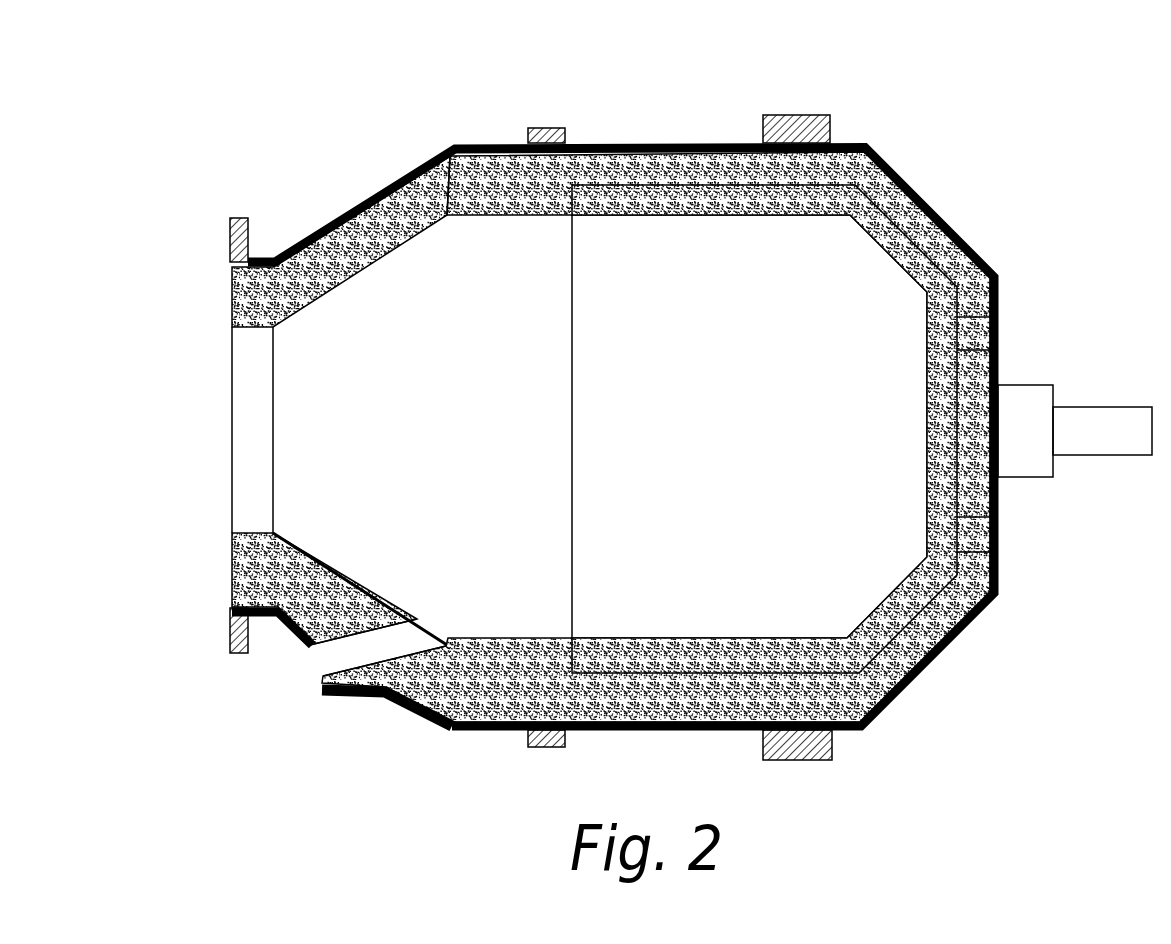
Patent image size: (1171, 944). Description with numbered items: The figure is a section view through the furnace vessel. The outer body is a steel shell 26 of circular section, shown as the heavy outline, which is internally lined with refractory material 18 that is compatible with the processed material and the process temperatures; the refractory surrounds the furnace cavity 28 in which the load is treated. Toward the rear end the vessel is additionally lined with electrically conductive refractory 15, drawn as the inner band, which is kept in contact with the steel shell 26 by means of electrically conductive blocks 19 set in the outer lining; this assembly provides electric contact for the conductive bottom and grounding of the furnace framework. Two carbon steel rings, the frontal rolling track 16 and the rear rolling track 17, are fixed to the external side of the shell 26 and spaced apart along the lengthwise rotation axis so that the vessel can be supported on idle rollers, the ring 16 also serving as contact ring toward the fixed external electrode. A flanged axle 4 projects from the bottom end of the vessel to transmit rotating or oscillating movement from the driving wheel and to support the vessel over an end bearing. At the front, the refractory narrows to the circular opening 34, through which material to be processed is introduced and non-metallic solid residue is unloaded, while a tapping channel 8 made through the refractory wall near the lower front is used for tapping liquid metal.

The flanged axle 4 is at (1090, 417).
The tapping channel 8 is at (315, 665).
The electrically conductive refractory 15 is at (908, 253).
The steel ring, frontal rolling track 16 is at (532, 128).
The steel ring, rear rolling track 17 is at (807, 115).
The refractory material 18 is at (450, 187).
The electrically conductive blocks 19 is at (980, 533).
The steel shell 26 is at (918, 675).
The furnace cavity 28 is at (453, 560).
The circular opening 34 is at (252, 393).